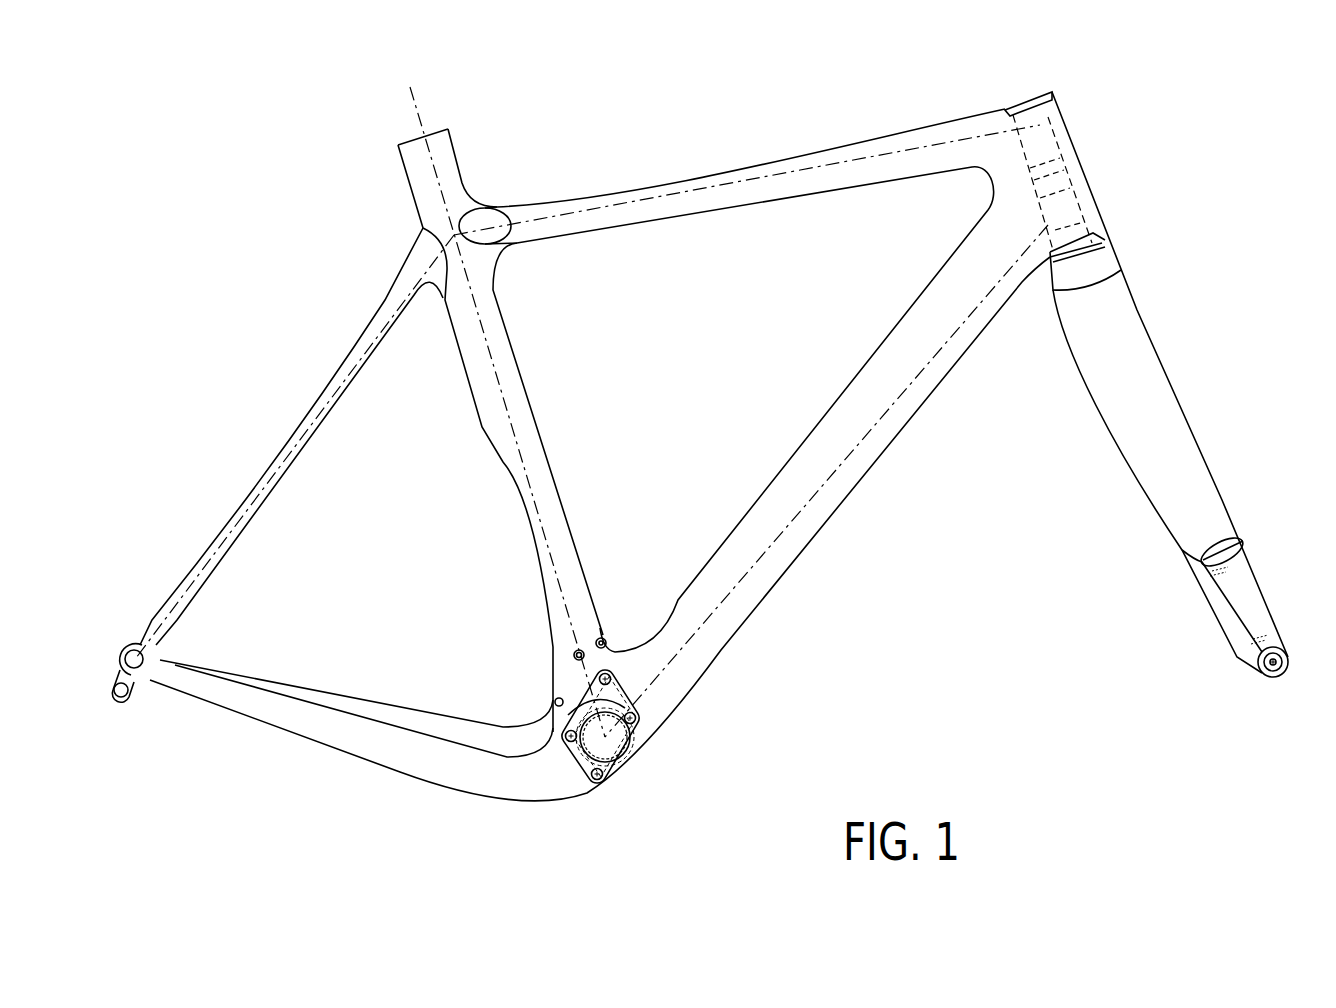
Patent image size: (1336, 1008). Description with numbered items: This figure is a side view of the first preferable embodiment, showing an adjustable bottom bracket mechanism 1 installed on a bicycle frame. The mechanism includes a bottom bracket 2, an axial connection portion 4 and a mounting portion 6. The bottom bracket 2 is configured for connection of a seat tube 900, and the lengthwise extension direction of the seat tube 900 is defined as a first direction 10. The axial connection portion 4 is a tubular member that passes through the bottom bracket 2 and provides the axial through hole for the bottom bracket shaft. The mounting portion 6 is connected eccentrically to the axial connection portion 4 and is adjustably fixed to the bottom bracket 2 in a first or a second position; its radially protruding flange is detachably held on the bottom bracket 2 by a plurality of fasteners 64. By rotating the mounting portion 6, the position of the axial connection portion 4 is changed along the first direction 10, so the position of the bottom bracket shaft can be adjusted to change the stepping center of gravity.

The adjustable bottom bracket mechanism 1 is at (718, 702).
The bottom bracket 2 is at (700, 429).
The axial connection portion 4 is at (612, 750).
The mounting portion 6 is at (599, 690).
The fasteners 64 is at (606, 677).
The first direction 10 is at (413, 110).
The seat tube 900 is at (429, 192).